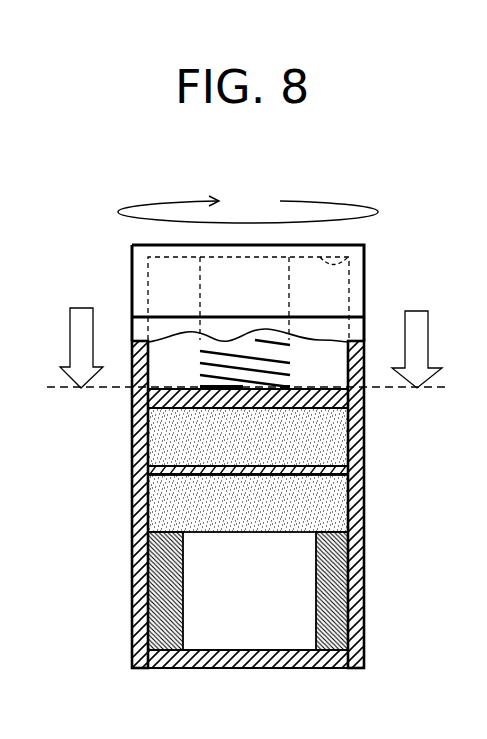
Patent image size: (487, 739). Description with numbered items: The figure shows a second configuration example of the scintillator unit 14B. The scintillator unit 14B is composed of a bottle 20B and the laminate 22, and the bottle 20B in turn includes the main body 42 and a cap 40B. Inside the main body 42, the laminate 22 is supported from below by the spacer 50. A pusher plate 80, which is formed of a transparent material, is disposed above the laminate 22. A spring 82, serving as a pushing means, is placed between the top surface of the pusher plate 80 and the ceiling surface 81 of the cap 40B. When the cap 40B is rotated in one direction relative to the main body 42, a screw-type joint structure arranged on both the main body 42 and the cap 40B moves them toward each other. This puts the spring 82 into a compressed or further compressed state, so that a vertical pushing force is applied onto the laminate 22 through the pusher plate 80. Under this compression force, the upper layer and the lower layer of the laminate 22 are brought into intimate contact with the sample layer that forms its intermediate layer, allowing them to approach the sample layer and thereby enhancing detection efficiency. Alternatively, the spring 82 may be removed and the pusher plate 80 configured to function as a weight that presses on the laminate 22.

The scintillator unit 14B is at (242, 243).
The bottle 20B is at (120, 260).
The ceiling surface 81 is at (345, 263).
The cap 40B is at (365, 280).
The spring 82 is at (190, 348).
The pusher plate 80 is at (307, 390).
The laminate 22 is at (352, 438).
The main body 42 is at (132, 497).
The spacer 50 is at (364, 571).